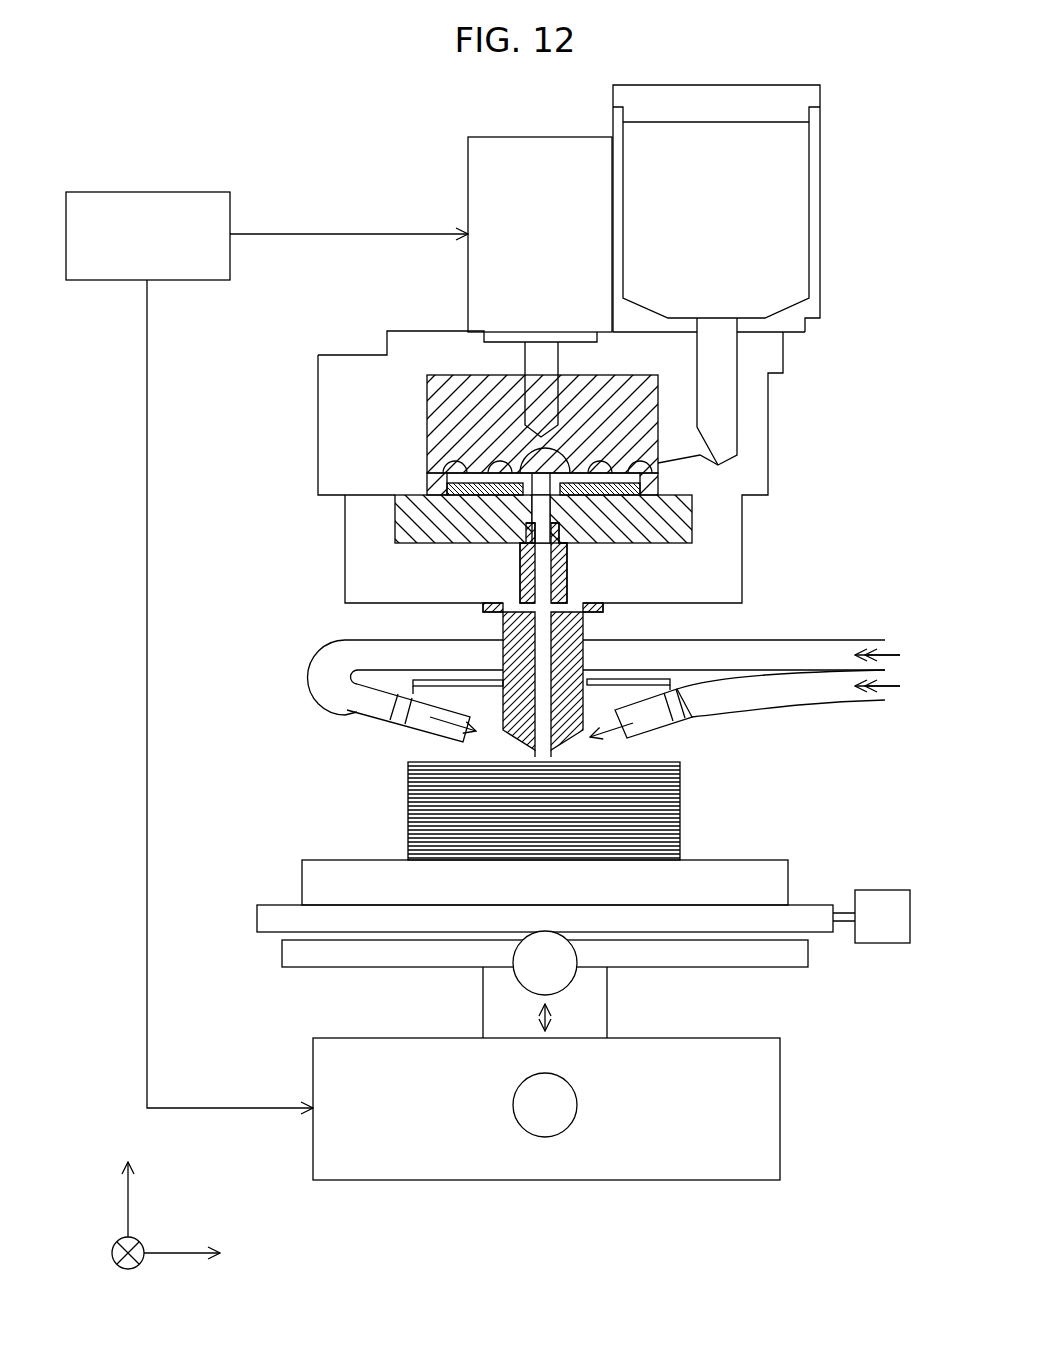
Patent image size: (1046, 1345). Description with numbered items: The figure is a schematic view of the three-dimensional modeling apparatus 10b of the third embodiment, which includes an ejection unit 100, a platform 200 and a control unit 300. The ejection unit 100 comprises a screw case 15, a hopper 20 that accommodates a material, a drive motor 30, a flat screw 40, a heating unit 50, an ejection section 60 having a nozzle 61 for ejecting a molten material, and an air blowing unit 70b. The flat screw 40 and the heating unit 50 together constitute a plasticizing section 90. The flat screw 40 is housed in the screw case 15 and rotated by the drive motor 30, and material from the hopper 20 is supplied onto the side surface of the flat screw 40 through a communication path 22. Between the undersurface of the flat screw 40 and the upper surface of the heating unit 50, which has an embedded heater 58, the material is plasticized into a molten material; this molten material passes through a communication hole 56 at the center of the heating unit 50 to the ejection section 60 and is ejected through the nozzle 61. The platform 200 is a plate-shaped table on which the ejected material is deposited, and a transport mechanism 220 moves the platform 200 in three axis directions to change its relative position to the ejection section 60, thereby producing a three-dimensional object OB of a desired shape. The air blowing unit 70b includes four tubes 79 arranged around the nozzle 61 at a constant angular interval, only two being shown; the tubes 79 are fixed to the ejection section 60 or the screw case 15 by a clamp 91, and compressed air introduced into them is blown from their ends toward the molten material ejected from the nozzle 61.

The three-dimensional modeling apparatus 10b is at (172, 104).
The control unit 300 is at (183, 192).
The drive motor 30 is at (468, 167).
The hopper 20 is at (756, 275).
The communication path 22 is at (715, 395).
The screw case 15 is at (343, 355).
The ejection unit 100 is at (571, 539).
The flat screw 40 is at (437, 392).
The heating unit 50 is at (650, 522).
The plasticizing section 90 is at (613, 441).
The heater 58 is at (545, 505).
The communication hole 56 is at (533, 512).
The ejection section 60 is at (537, 748).
The nozzle 61 is at (553, 763).
The clamp 91 is at (457, 690).
The tubes 79 is at (370, 713).
The air blowing unit 70b is at (840, 702).
The three-dimensional object OB is at (408, 807).
The platform 200 is at (737, 858).
The transport mechanism 220 is at (596, 999).